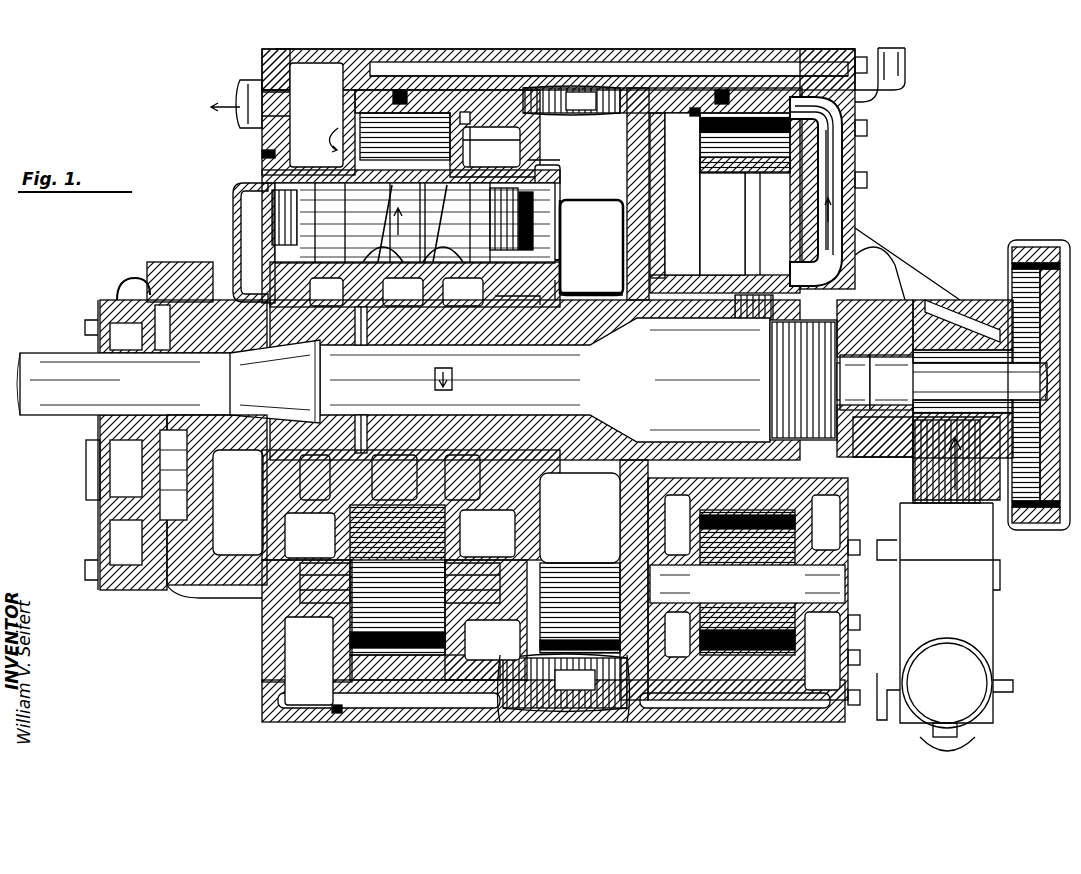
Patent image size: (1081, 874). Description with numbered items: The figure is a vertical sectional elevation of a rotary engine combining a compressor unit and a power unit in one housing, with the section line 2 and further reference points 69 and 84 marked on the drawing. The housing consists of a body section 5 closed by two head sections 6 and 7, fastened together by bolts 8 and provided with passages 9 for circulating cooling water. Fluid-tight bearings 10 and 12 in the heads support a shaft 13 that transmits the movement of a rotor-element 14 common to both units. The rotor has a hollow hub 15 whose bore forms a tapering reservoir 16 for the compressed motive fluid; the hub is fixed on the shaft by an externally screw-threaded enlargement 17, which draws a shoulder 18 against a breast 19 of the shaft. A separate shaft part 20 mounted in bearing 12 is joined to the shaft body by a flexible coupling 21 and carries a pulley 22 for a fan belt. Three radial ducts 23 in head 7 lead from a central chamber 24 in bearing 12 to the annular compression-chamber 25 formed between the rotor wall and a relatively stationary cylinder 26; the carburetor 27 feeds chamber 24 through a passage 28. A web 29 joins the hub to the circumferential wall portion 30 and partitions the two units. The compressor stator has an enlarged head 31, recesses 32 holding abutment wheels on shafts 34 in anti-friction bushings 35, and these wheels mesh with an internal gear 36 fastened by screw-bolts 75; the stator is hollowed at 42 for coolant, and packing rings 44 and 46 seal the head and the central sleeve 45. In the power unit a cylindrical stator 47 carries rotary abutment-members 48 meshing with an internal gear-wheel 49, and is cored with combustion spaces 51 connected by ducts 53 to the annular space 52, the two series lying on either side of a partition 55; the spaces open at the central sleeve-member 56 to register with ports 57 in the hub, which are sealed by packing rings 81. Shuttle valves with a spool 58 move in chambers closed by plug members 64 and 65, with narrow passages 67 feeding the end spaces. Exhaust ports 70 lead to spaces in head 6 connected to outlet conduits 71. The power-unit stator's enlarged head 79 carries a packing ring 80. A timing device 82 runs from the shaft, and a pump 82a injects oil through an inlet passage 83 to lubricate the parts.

The section line 2- 2 is at (758, 740).
The body section 5 is at (505, 55).
The head section 6 is at (293, 55).
The head section 7 is at (828, 52).
The bolts 8 is at (867, 129).
The passages 9 is at (548, 67).
The fluid-tight bearing 10 is at (213, 295).
The fluid-tight bearing 12 is at (960, 300).
The shaft 13 is at (408, 380).
The rotor-element 14 is at (642, 90).
The hollow hub 15 is at (568, 305).
The reservoir 16 is at (628, 302).
The externally screw-threaded enlargement 17 is at (838, 340).
The shoulder 18 is at (265, 472).
The breast 19 is at (312, 380).
The shaft part 20 is at (982, 372).
The flexible coupling 21 is at (888, 385).
The pulley 22 is at (1026, 250).
The radial ducts 23 is at (830, 197).
The central chamber 24 is at (984, 300).
The annular compression-chamber 25 is at (800, 146).
The stationary cylinder 26 is at (727, 175).
The carburetor 27 is at (975, 584).
The passage 28 is at (1035, 562).
The web 29 is at (640, 222).
The circumferential wall portion 30 is at (468, 112).
The enlarged head 31 is at (630, 180).
The peripheral recesses 32 is at (748, 589).
The shafts 34 is at (830, 583).
The anti-friction bushings 35 is at (752, 592).
The internal gear 36 is at (785, 95).
The hollowed part 42 is at (726, 203).
The packing rings 44 is at (695, 108).
The central sleeve 45 is at (714, 282).
The packing rings 46 is at (730, 295).
The cylindrical stator 47 is at (272, 178).
The rotary abutment-members 48 is at (335, 615).
The internal gear-wheel 49 is at (340, 714).
The combustion spaces 51 is at (415, 381).
The annular space 52 is at (262, 153).
The ducts 53 is at (352, 235).
The partition 55 is at (397, 389).
The central sleeve-member 56 is at (505, 300).
The ports 57 is at (361, 395).
The spool 58 is at (272, 228).
The plug member 64 is at (238, 211).
The plug member 65 is at (546, 172).
The narrow passages 67 is at (538, 265).
The bearing cap 69 is at (100, 470).
The exhaust ports 70 is at (345, 132).
The outlet conduits 71 is at (250, 96).
The screw-bolts 75 is at (403, 95).
The enlarged head 79 is at (512, 88).
The packing ring 80 is at (465, 112).
The packing rings 81 is at (322, 500).
The timing device 82 is at (128, 290).
The pump 82a is at (580, 608).
The inlet passage 83 is at (160, 595).
The bearing cap 84 is at (551, 700).